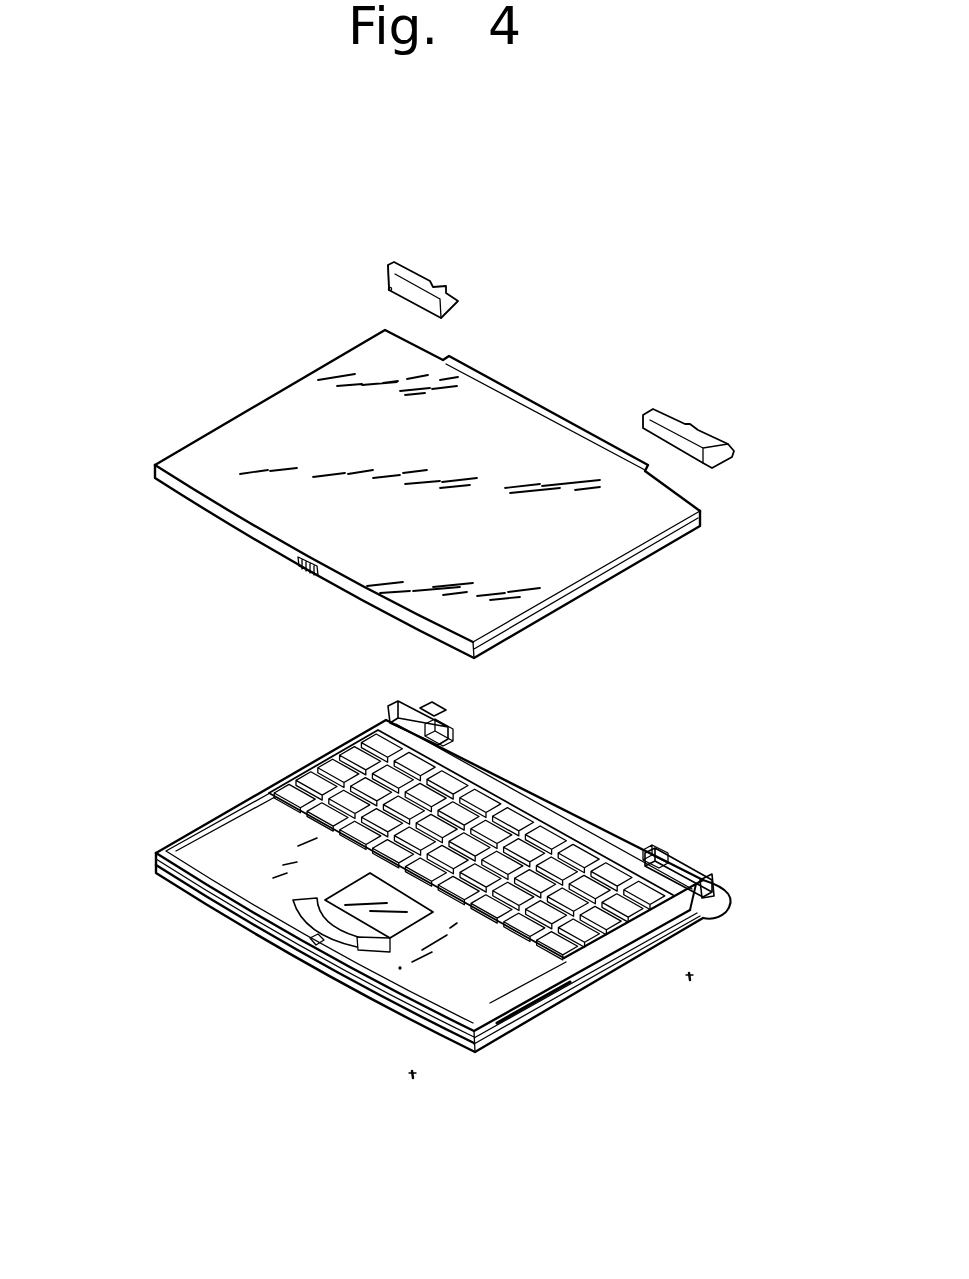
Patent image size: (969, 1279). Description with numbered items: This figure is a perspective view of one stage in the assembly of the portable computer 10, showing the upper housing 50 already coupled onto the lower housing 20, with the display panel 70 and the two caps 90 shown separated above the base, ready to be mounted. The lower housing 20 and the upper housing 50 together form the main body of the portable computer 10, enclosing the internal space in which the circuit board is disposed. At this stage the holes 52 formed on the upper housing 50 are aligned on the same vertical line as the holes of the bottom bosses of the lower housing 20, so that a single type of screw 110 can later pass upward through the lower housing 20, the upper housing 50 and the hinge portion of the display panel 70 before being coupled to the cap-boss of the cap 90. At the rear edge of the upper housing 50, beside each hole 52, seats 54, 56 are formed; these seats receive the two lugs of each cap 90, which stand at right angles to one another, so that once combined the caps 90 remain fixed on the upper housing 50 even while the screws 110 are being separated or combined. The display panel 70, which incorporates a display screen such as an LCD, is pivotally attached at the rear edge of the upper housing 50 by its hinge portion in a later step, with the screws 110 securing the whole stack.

The portable computer 10 is at (214, 250).
The lower housing 20 is at (165, 883).
The upper housing 50 is at (233, 833).
The hole 52 is at (435, 723).
The seat 54 is at (428, 712).
The seat 56 is at (452, 730).
The display panel 70 is at (270, 412).
The cap 90 is at (420, 276).
The screw 110 is at (694, 978).